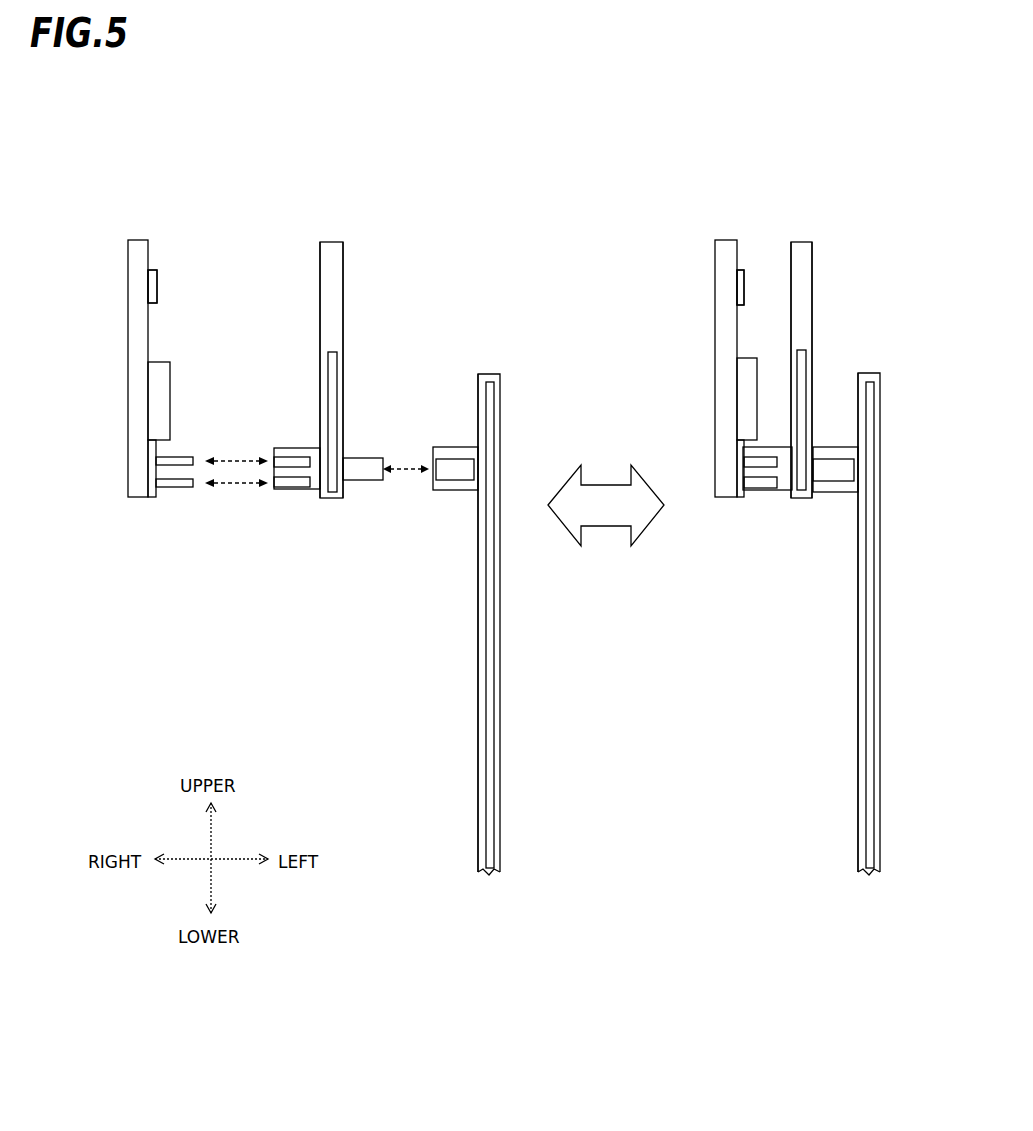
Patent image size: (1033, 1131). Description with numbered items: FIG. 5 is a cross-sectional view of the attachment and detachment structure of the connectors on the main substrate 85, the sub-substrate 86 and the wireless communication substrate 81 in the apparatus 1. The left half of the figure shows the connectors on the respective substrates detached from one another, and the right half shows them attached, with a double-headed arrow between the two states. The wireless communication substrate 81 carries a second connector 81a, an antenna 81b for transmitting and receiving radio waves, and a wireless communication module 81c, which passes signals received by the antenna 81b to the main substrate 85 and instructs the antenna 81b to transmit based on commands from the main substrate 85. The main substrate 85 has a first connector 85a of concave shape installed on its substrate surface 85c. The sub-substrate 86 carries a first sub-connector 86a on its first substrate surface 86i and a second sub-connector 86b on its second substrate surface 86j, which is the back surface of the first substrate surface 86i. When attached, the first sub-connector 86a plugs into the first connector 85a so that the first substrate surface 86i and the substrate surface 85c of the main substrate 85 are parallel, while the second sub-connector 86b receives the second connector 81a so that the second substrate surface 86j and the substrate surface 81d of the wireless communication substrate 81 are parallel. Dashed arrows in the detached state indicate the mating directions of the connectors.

The image forming apparatus 1 is at (487, 226).
The wireless communication substrate 81 is at (140, 240).
The second connector 81a is at (172, 489).
The antenna 81b is at (150, 289).
The wireless communication module 81c is at (160, 399).
The substrate surface of the wireless communication substrate 81d is at (150, 263).
The main substrate 85 is at (500, 637).
The first connector 85a is at (455, 449).
The substrate surface of the main substrate 85c is at (478, 572).
The sub-substrate 86 is at (331, 242).
The first sub-connector 86a is at (365, 479).
The second sub-connector 86b is at (315, 488).
The first substrate surface 86i is at (343, 272).
The second substrate surface 86j is at (320, 272).